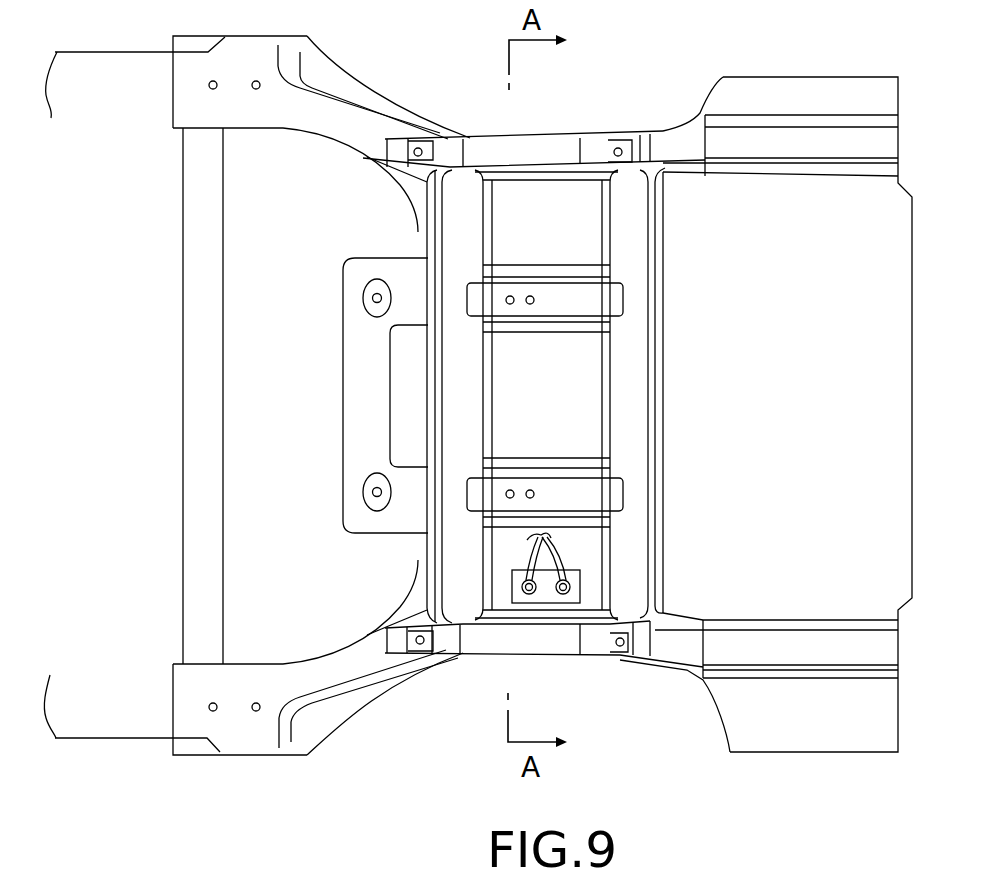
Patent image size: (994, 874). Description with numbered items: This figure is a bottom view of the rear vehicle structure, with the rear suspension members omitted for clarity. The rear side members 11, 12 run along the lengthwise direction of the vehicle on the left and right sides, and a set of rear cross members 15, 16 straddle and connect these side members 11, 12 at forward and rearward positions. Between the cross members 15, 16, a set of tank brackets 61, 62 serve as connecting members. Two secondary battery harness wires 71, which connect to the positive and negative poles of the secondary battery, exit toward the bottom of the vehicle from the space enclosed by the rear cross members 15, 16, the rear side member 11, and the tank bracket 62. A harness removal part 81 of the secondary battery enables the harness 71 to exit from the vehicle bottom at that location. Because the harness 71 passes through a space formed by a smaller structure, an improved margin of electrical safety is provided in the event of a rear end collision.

The rear side member 11 is at (563, 645).
The rear side member 12 is at (570, 150).
The rear cross member 15 is at (473, 180).
The rear cross member 16 is at (637, 187).
The tank bracket 61 is at (610, 300).
The tank bracket 62 is at (610, 497).
The secondary battery harness wire 71 is at (512, 587).
The harness removal part 81 is at (573, 598).